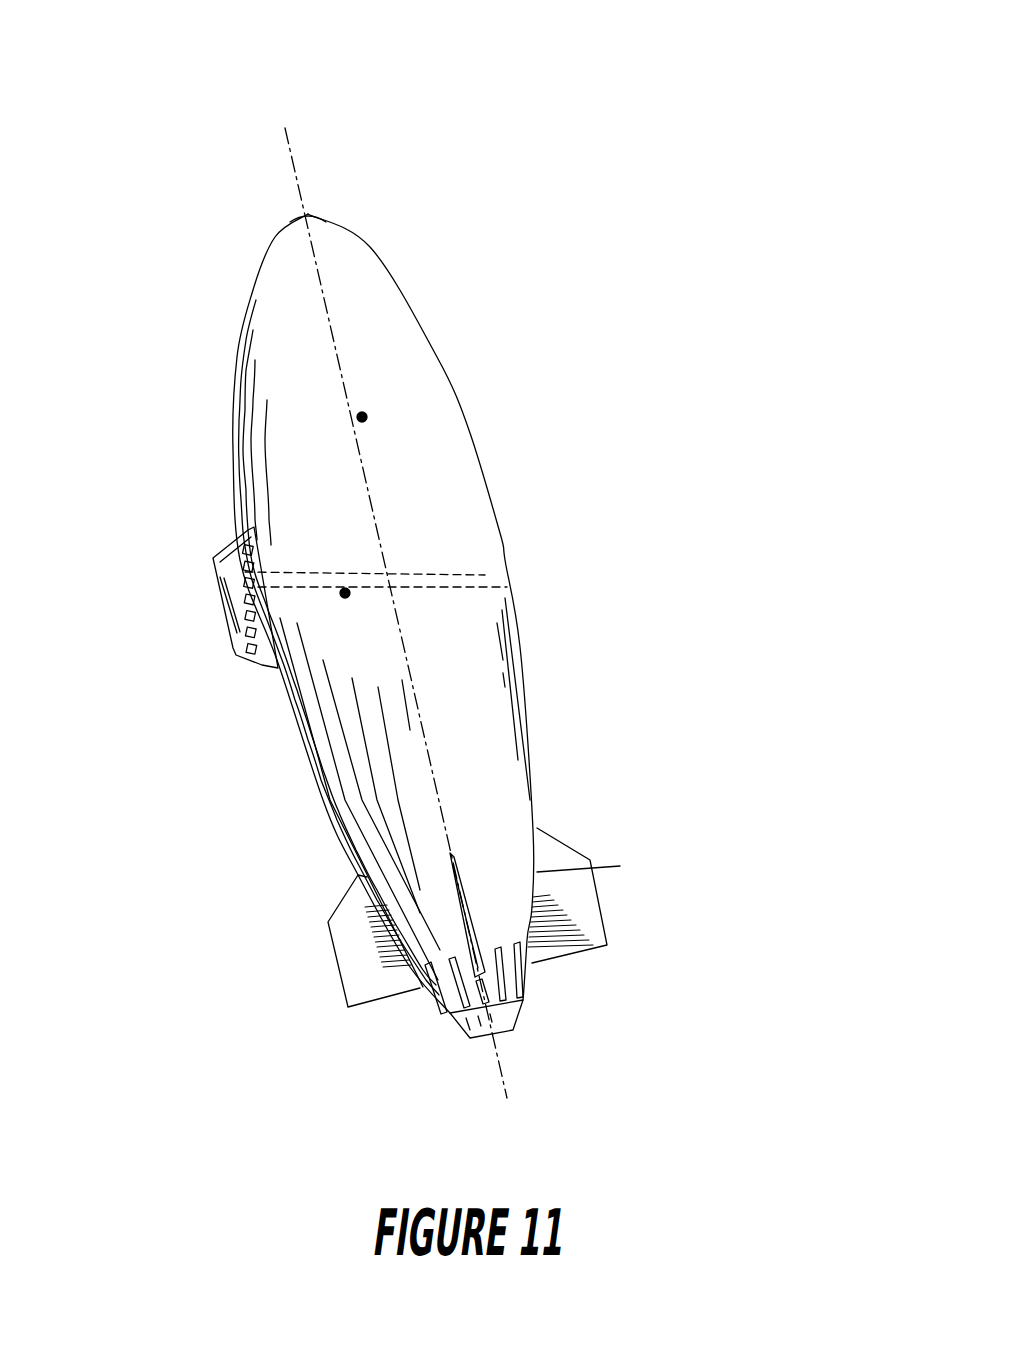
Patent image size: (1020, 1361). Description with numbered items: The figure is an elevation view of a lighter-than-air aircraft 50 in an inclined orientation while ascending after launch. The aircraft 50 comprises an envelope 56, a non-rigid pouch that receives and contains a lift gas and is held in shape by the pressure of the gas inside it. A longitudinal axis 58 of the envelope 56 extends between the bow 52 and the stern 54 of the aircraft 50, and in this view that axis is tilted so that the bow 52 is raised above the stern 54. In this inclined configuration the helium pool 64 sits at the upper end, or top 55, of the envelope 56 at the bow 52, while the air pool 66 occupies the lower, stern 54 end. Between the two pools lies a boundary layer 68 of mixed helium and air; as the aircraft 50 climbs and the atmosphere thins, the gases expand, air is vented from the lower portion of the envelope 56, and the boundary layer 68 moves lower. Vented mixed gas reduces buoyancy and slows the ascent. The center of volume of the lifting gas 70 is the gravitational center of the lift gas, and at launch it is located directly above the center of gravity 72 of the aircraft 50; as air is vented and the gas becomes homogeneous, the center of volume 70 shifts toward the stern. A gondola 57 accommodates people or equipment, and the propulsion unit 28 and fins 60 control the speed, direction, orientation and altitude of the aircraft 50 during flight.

The lighter-than-air aircraft 50 is at (653, 405).
The bow 52 is at (275, 237).
The top of the envelope 55 is at (368, 245).
The longitudinal axis 58 is at (302, 192).
The center of volume of the lifting gas 70 is at (362, 417).
The helium pool 64 is at (290, 416).
The air pool 66 is at (318, 703).
The envelope 56 is at (518, 645).
The boundary layer 68 is at (485, 575).
The center of gravity 72 is at (345, 593).
The gondola 57 is at (218, 555).
The fins 60 is at (333, 962).
The stern 54 is at (620, 866).
The propulsion unit 28 is at (520, 1017).